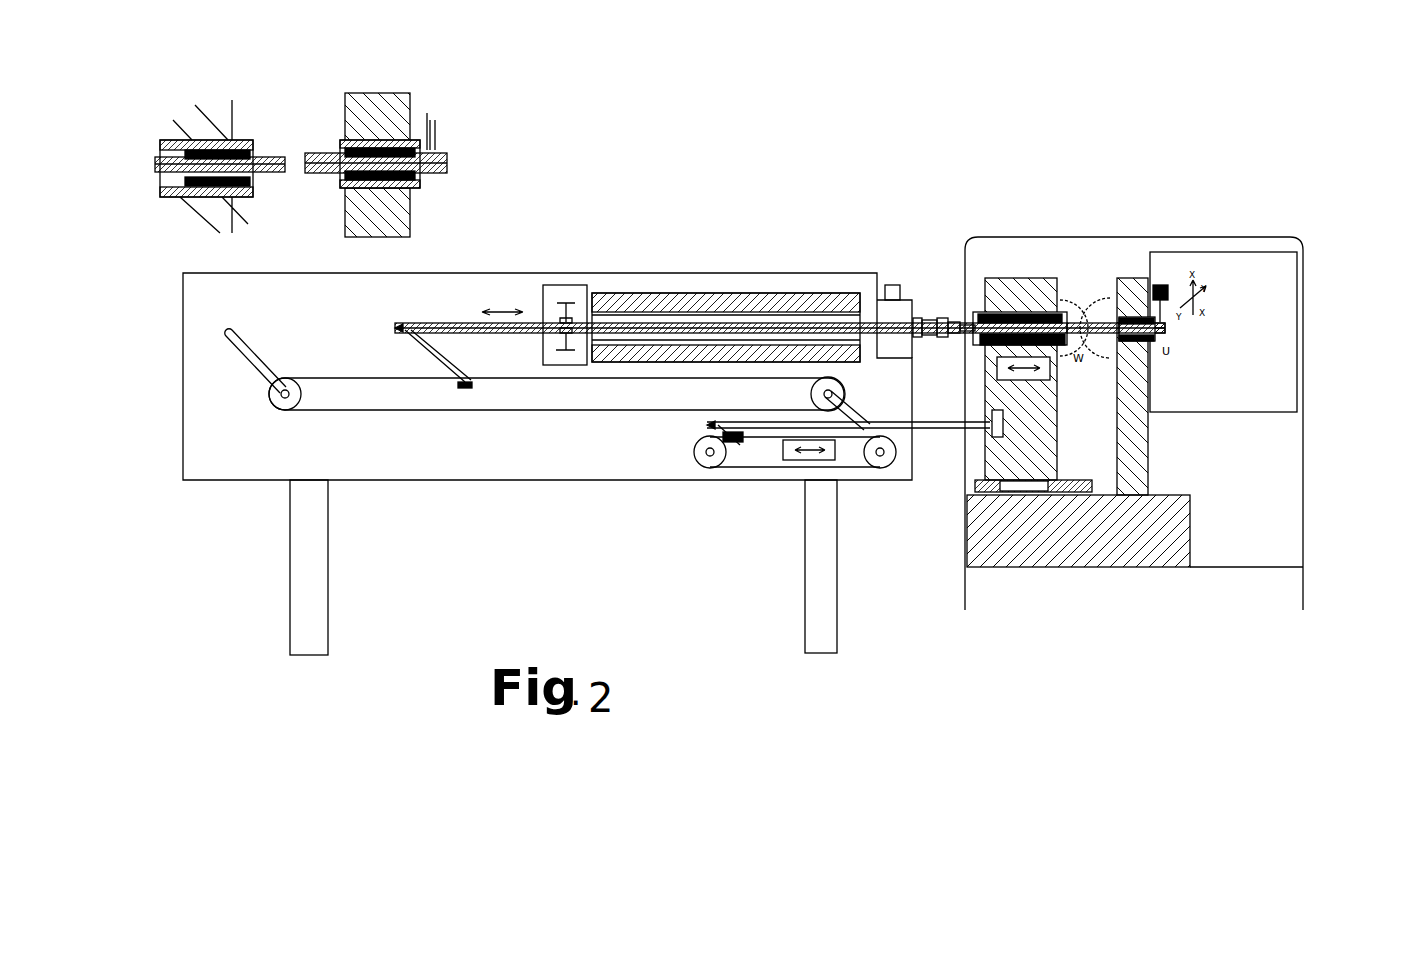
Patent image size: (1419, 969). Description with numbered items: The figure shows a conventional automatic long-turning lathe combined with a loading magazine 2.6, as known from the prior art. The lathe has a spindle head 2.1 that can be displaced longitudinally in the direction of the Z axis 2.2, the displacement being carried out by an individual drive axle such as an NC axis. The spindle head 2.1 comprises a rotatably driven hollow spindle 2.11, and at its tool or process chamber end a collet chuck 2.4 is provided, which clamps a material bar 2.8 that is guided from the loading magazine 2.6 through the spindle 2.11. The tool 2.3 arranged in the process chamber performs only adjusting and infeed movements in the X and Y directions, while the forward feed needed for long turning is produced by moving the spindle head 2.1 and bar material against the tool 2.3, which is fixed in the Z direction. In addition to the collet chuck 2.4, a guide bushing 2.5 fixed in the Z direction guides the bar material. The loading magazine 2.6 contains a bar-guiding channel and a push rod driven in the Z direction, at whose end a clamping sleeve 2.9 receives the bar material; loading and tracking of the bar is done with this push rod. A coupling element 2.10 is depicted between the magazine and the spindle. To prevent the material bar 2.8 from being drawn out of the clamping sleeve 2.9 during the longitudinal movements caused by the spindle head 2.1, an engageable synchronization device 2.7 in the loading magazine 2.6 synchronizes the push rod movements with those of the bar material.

The spindle head 2.1 is at (1052, 298).
The Z axis 2.2 is at (1057, 377).
The tool 2.3 is at (1162, 287).
The collet chuck 2.4 is at (223, 200).
The guide bushing 2.5 is at (413, 203).
The loading magazine 2.6 is at (608, 412).
The synchronization device 2.7 is at (833, 467).
The material bar 2.8 is at (688, 293).
The clamping sleeve 2.9 is at (552, 322).
The coupling 2.10 is at (935, 320).
The hollow spindle 2.11 is at (1025, 300).